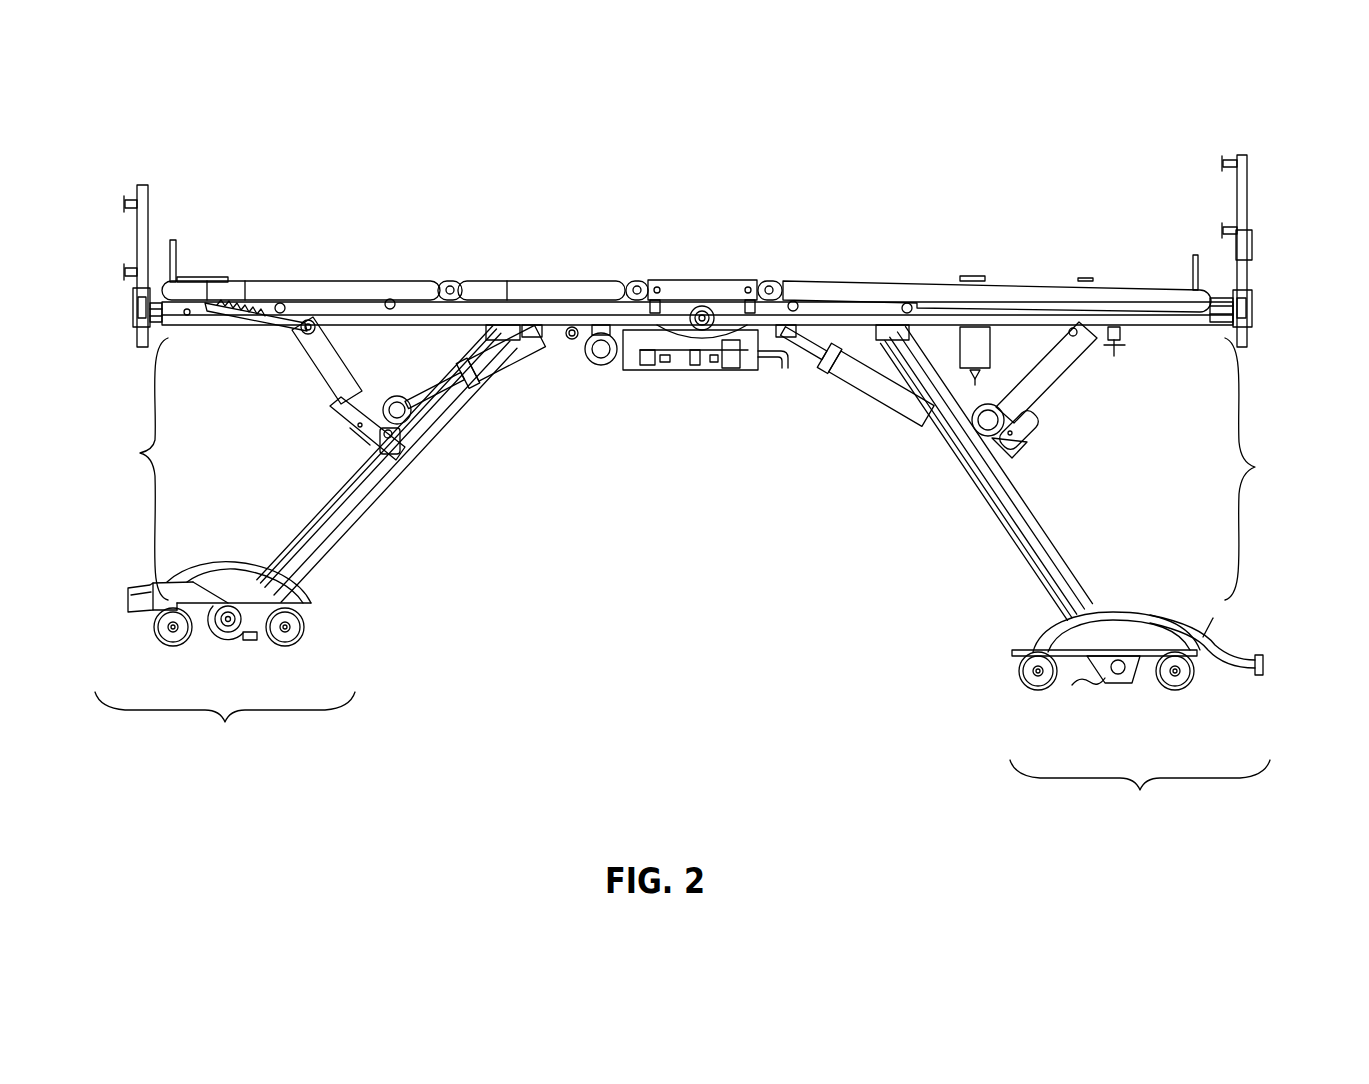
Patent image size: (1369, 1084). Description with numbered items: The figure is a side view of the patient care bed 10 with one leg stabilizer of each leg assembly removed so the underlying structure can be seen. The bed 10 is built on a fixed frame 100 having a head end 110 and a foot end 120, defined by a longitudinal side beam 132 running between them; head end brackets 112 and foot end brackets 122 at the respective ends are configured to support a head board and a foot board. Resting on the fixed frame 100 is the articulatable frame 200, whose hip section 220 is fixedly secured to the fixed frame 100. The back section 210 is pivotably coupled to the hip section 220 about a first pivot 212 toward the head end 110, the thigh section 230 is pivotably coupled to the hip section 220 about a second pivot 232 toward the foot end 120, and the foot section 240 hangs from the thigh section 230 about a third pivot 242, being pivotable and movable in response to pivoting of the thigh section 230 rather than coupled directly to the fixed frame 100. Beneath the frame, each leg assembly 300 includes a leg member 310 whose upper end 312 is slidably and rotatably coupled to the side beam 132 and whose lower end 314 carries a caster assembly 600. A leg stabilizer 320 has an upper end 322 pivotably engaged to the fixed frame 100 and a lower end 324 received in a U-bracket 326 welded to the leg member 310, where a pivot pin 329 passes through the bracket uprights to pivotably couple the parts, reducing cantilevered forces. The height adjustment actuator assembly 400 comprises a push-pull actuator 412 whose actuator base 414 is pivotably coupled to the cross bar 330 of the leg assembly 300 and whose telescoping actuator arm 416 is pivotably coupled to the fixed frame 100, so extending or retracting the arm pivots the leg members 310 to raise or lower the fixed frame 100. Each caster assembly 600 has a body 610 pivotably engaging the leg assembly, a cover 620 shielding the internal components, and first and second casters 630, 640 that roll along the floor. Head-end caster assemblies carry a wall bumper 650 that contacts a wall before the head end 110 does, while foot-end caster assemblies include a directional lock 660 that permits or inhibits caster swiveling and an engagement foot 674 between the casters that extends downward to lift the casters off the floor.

The patient care bed 10 is at (963, 117).
The fixed frame 100 is at (694, 290).
The head end 110 is at (1255, 310).
The head end brackets 112 is at (1248, 193).
The foot end 120 is at (135, 312).
The foot end brackets 122 is at (135, 228).
The longitudinal side beam 132 is at (572, 341).
The articulatable frame 200 is at (686, 256).
The back section 210 is at (925, 283).
The first pivot 212 is at (772, 285).
The hip section 220 is at (703, 280).
The thigh section 230 is at (557, 281).
The second pivot 232 is at (638, 285).
The foot section 240 is at (279, 280).
The third pivot 242 is at (453, 283).
The leg assembly 300 is at (696, 460).
The leg member 310 is at (323, 517).
The upper end 312 is at (488, 372).
The lower end 314 is at (300, 572).
The leg stabilizer 320 is at (320, 370).
The upper end 322 is at (300, 345).
The lower end 324 is at (355, 418).
The U-bracket 326 is at (390, 440).
The pivot pin 329 is at (355, 438).
The cross bar 330 is at (1015, 425).
The height adjustment actuator assembly 400 is at (582, 391).
The push-pull actuator 412 is at (388, 404).
The actuator base 414 is at (428, 400).
The actuator arm 416 is at (820, 345).
The caster assembly 600 is at (698, 670).
The body 610 is at (243, 630).
The cover 620 is at (250, 585).
The first caster 630 is at (302, 628).
The second caster 640 is at (168, 628).
The wall bumper 650 is at (1265, 665).
The directional lock 660 is at (132, 600).
The engagement foot 674 is at (250, 641).